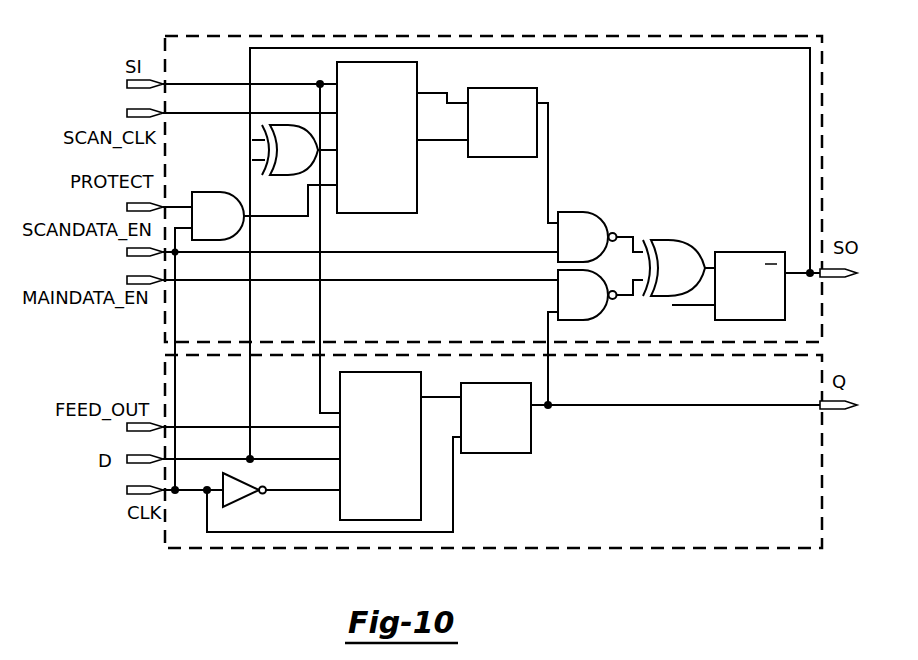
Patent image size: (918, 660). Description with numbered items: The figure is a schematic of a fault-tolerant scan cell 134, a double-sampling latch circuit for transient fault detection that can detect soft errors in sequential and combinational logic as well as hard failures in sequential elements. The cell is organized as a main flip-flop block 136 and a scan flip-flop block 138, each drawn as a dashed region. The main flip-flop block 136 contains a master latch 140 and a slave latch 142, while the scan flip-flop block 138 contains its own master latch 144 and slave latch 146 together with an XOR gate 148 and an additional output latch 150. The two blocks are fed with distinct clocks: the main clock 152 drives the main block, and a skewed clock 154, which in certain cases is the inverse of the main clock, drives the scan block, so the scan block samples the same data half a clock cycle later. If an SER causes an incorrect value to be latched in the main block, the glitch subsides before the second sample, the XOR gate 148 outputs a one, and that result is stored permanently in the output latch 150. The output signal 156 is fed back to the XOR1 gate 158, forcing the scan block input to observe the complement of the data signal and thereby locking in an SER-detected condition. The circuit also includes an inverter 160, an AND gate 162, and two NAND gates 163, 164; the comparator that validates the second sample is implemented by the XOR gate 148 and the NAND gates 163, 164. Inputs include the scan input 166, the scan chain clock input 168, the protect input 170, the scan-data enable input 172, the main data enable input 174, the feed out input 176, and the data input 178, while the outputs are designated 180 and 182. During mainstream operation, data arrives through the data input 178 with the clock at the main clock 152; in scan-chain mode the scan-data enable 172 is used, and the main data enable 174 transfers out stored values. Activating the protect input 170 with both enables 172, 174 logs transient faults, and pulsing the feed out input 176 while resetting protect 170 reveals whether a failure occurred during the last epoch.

The fault-tolerant scan cell 134 is at (92, 572).
The main flip-flop block 136 is at (257, 548).
The scan flip-flop block 138 is at (165, 330).
The master latch 140 is at (422, 497).
The slave latch 142 is at (505, 454).
The master latch 144 is at (418, 200).
The slave latch 146 is at (505, 158).
The XOR gate 148 is at (669, 240).
The output latch 150 is at (785, 252).
The main clock 152 is at (127, 490).
The skewed clock 154 is at (672, 305).
The output signal 156 is at (810, 147).
The XOR1 gate 158 is at (284, 125).
The inverter 160 is at (240, 506).
The AND gate 162 is at (236, 240).
The NAND gate 163 is at (575, 212).
The NAND gate 164 is at (558, 300).
The input 166 is at (127, 84).
The scan chain clock input 168 is at (127, 113).
The protect input 170 is at (127, 207).
The scan-data enable input 172 is at (127, 252).
The main data enable input 174 is at (127, 280).
The feed out input 176 is at (127, 427).
The data input 178 is at (127, 459).
The output 180 is at (838, 281).
The output 182 is at (836, 413).